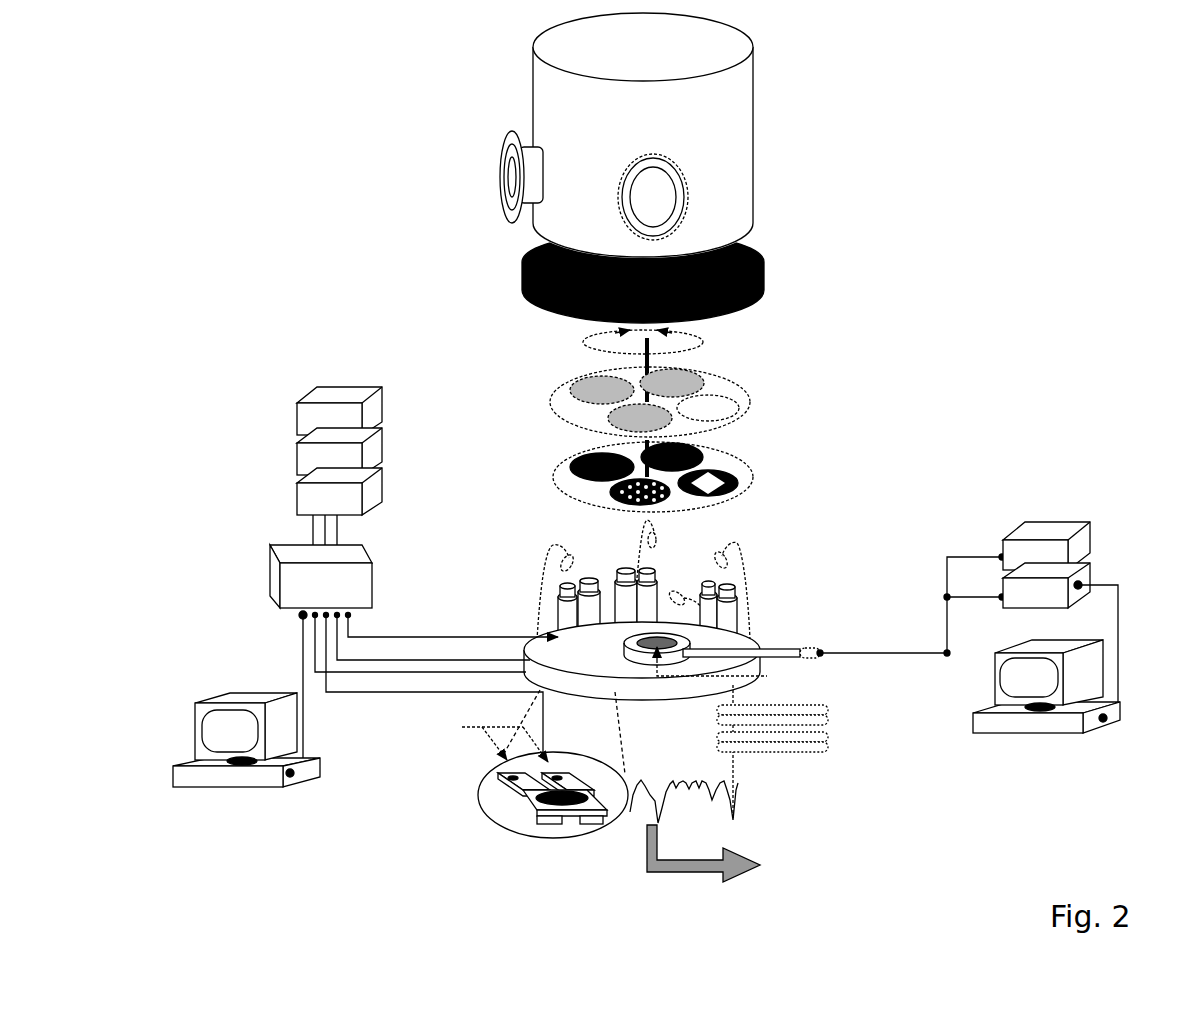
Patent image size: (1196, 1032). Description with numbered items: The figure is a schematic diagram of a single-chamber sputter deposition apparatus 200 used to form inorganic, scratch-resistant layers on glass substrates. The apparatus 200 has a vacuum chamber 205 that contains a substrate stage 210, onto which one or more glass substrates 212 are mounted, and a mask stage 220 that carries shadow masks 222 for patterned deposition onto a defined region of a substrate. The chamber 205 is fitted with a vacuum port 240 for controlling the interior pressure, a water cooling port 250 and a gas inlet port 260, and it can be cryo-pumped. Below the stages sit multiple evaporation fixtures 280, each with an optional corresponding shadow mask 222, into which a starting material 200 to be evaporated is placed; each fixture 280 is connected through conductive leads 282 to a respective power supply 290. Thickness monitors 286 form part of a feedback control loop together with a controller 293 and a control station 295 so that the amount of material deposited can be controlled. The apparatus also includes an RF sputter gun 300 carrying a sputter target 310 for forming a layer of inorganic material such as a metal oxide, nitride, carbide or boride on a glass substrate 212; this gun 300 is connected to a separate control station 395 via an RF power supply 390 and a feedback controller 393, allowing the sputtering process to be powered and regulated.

The single-chamber sputter deposition apparatus 200 is at (992, 214).
The vacuum chamber 205 is at (737, 217).
The substrate stage 210 is at (737, 400).
The glass substrate 212 is at (597, 390).
The mask stage 220 is at (737, 467).
The shadow mask 222 is at (617, 493).
The vacuum port 240 is at (739, 854).
The water cooling port 250 is at (825, 715).
The gas inlet port 260 is at (827, 743).
The evaporation fixture 280 is at (607, 585).
The conductive lead 282 is at (400, 657).
The thickness monitor 286 is at (550, 553).
The power supply 290 is at (310, 503).
The controller 293 is at (321, 576).
The control station 295 is at (248, 778).
The RF sputter gun 300 is at (797, 643).
The sputter target 310 is at (744, 733).
The RF power supply 390 is at (1058, 553).
The feedback controller 393 is at (1060, 592).
The control station 395 is at (1008, 717).